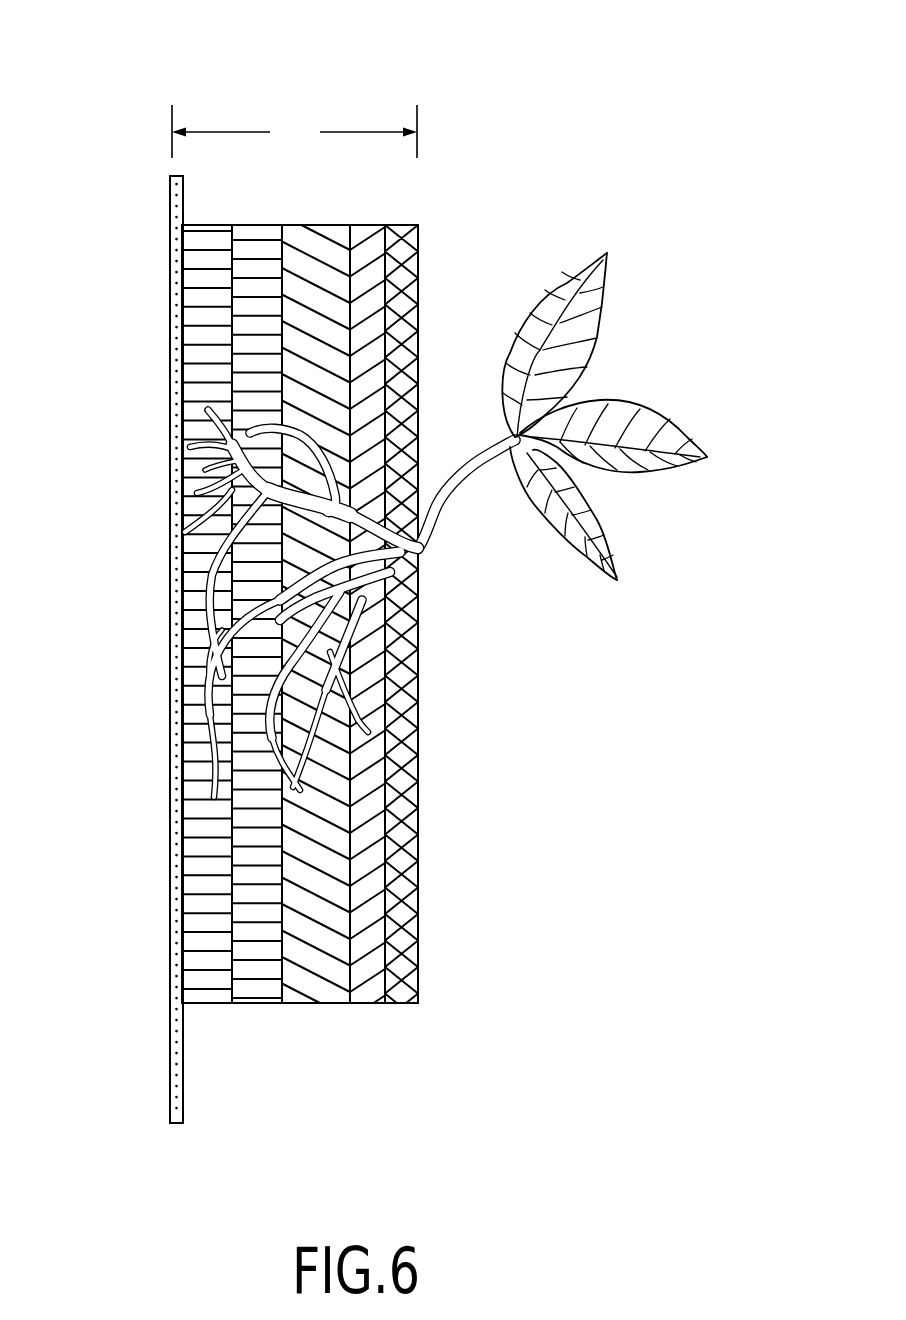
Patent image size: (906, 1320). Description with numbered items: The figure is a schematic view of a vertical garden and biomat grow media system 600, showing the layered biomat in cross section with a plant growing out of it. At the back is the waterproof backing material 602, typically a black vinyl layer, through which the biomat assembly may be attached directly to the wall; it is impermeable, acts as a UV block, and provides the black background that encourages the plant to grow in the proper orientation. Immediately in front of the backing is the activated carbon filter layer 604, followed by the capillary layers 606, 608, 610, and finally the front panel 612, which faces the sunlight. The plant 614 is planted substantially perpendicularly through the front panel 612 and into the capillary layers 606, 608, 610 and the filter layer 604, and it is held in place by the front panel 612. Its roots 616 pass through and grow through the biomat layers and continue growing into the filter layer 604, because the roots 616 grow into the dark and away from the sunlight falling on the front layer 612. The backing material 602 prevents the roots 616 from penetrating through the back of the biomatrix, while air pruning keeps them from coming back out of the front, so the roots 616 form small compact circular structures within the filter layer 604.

The vertical garden and biomat grow media system 600 is at (648, 55).
The waterproof backing material 602 is at (172, 270).
The filter layer 604 is at (207, 330).
The capillary layer 606 is at (252, 377).
The capillary layer 608 is at (307, 823).
The capillary layer 610 is at (362, 867).
The front panel 612 is at (402, 930).
The plant 614 is at (607, 283).
The roots 616 is at (213, 720).